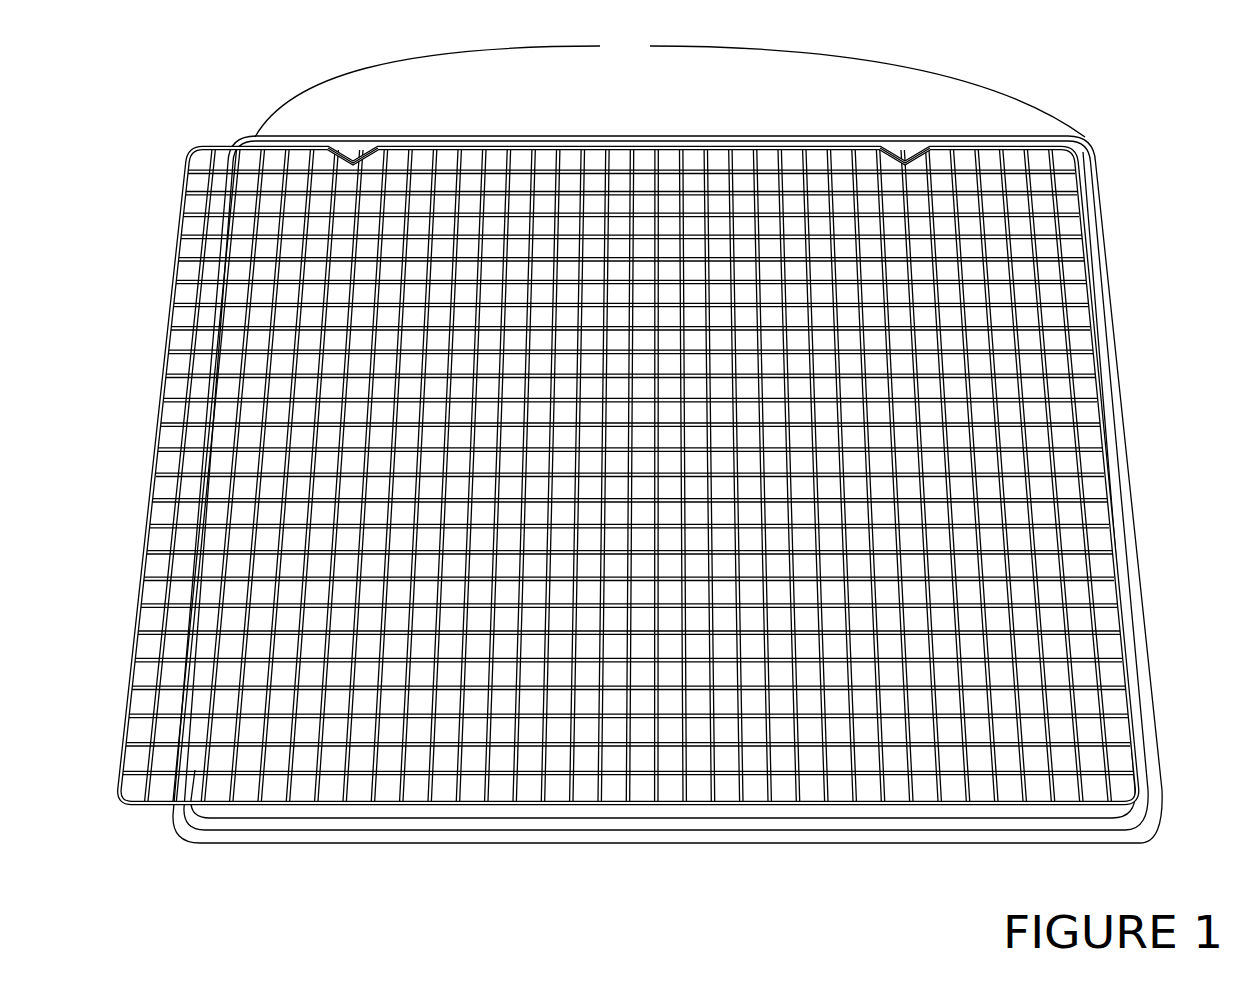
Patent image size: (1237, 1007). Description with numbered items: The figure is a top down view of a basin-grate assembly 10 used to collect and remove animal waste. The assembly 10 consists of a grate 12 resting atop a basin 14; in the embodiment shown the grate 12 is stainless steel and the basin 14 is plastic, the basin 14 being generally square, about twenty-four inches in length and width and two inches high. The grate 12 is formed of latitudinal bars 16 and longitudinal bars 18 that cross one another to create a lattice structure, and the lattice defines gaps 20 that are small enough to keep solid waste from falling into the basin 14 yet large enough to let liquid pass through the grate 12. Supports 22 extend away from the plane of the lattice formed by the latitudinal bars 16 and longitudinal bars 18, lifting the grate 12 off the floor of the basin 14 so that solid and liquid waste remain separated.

The basin-grate assembly 10 is at (670, 84).
The grate 12 is at (330, 770).
The basin 14 is at (562, 852).
The latitudinal bars 16 is at (767, 796).
The longitudinal bars 18 is at (878, 796).
The gaps 20 is at (651, 138).
The supports 22 is at (356, 158).